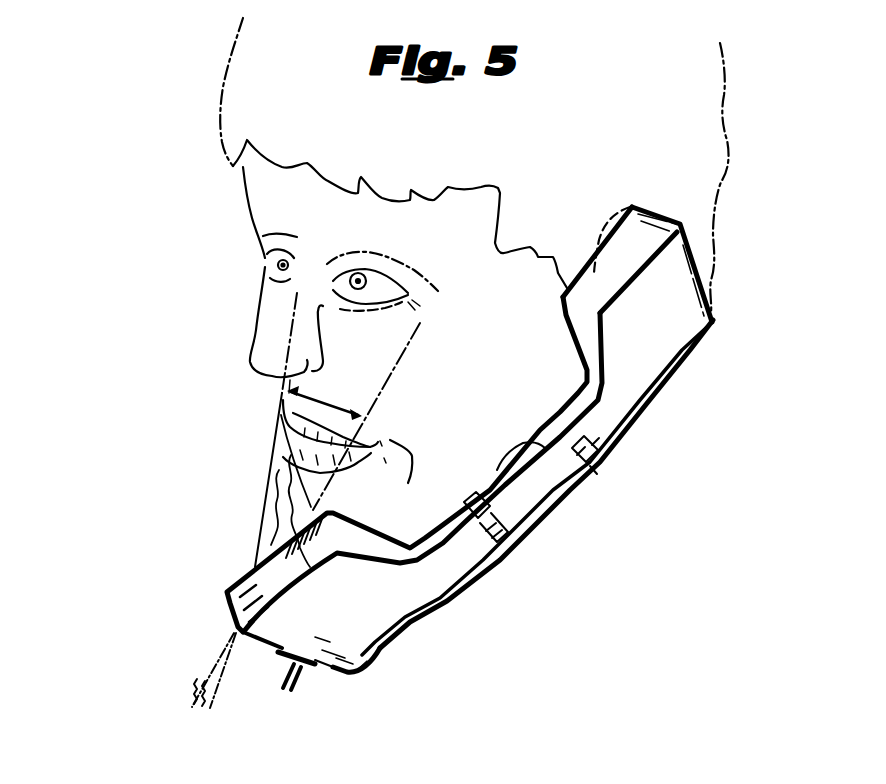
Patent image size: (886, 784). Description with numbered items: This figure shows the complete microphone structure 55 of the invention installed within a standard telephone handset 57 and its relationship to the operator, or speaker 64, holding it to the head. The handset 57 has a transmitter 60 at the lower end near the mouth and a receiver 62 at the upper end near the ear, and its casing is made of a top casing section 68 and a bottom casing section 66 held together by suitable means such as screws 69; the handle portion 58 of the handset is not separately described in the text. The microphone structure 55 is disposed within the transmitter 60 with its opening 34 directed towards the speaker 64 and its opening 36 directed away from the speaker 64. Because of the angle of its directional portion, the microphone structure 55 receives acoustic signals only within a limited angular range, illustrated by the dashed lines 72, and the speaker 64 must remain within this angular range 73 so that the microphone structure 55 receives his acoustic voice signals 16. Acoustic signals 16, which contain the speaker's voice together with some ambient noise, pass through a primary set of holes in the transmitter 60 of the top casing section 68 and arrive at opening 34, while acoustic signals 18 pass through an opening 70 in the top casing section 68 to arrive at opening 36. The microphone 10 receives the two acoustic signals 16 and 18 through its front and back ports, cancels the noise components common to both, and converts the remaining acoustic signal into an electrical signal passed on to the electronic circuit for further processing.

The microphone 10 is at (280, 592).
The acoustic signals 16 is at (267, 502).
The acoustic signals 18 is at (184, 693).
The opening 34 is at (265, 573).
The opening 36 is at (233, 632).
The microphone structure 55 is at (318, 512).
The telephone handset 57 is at (458, 438).
The handle 58 is at (537, 530).
The transmitter 60 is at (335, 671).
The receiver 62 is at (694, 259).
The speaker 64 is at (268, 88).
The bottom casing section 66 is at (638, 370).
The top casing section 68 is at (592, 286).
The screws 69 is at (468, 508).
The opening 70 is at (240, 637).
The dashed lines 72 is at (405, 358).
The angular range 73 is at (327, 402).